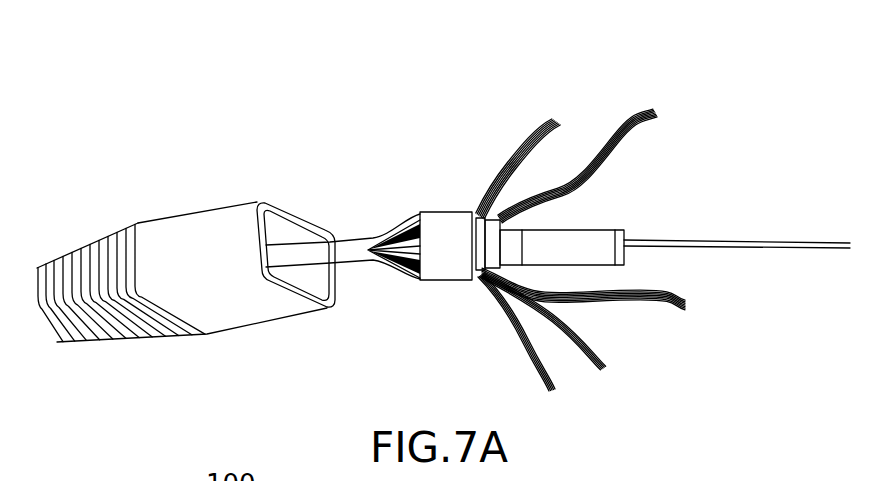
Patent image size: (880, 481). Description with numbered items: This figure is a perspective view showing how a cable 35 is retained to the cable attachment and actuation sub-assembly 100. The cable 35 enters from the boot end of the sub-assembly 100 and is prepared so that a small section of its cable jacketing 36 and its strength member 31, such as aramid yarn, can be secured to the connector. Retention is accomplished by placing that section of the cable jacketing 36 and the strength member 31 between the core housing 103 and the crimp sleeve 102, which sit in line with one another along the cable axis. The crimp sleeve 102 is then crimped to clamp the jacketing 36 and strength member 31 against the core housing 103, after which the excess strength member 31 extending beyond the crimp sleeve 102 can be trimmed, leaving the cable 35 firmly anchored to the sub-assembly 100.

The cable attachment and actuation sub-assembly 100 is at (258, 146).
The cable 35 is at (331, 253).
The cable jacketing 36 is at (400, 224).
The strength member 31 is at (536, 143).
The crimp sleeve 102 is at (437, 258).
The core housing 103 is at (600, 228).